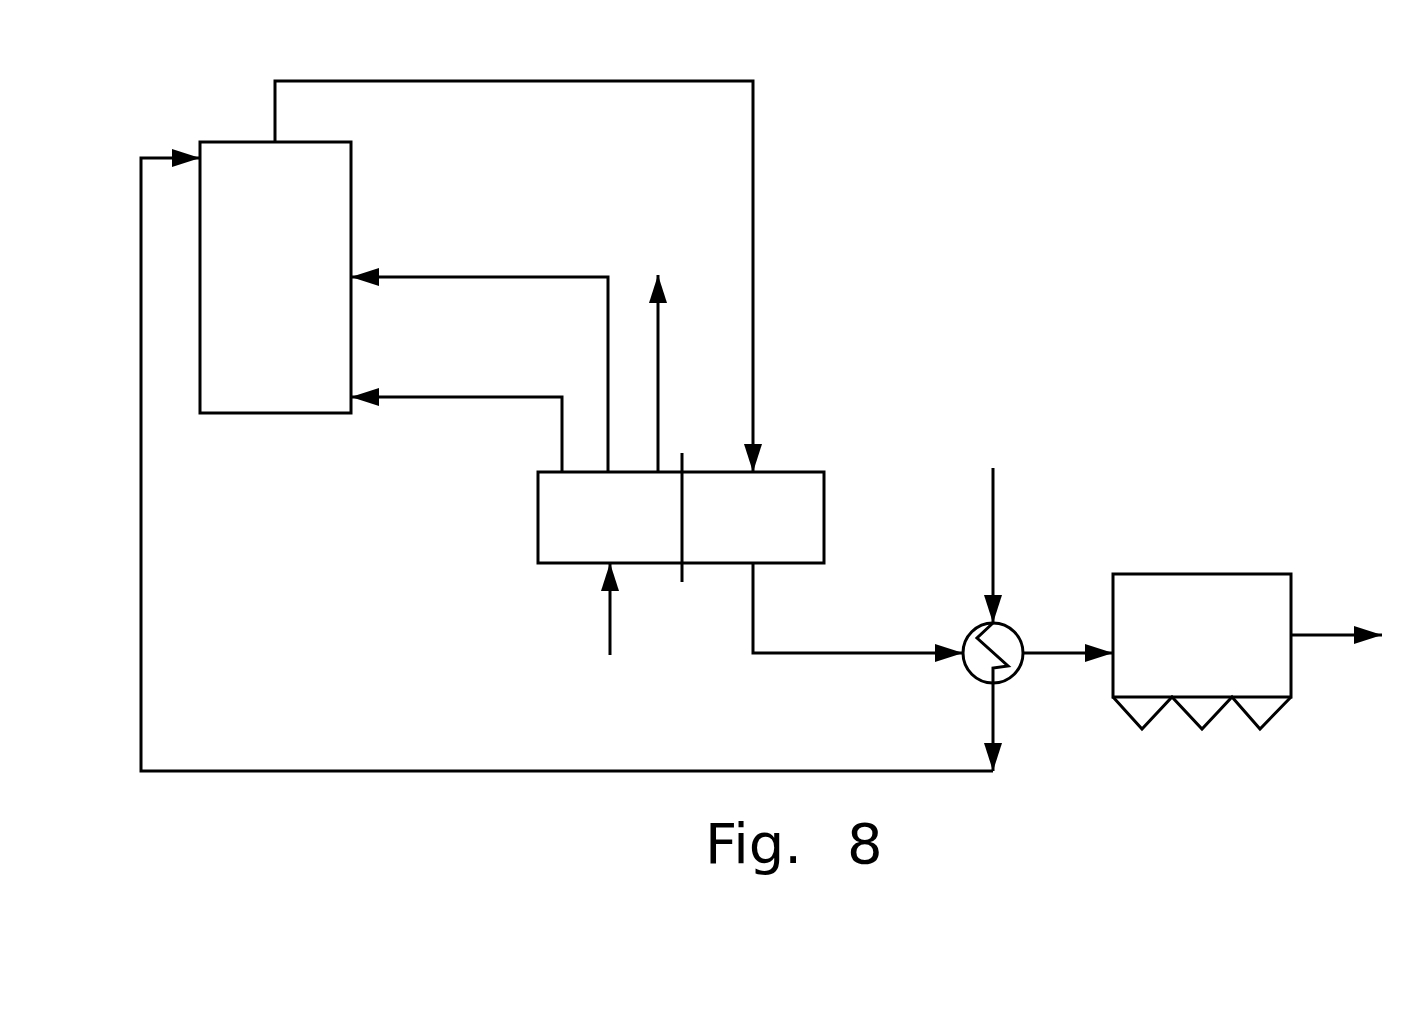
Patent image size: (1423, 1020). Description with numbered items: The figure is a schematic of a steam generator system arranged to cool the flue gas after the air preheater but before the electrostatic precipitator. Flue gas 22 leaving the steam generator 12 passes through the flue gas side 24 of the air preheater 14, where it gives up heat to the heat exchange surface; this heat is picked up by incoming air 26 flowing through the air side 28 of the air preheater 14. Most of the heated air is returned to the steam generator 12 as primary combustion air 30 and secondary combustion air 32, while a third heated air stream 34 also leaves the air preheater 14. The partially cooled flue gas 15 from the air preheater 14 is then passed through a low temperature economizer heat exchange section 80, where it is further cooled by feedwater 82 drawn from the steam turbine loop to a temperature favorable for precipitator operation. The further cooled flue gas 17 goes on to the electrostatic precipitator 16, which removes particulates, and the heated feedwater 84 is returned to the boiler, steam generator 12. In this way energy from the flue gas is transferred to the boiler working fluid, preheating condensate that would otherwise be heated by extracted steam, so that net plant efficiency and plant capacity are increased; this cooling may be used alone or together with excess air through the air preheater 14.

The steam generator 12 is at (243, 413).
The air preheater 14 is at (815, 516).
The partially cooled flue gas 15 is at (833, 655).
The electrostatic precipitator 16 is at (1223, 582).
The further cooled flue gas 17 is at (1322, 635).
The flue gas 22 is at (483, 82).
The flue gas side 24 is at (790, 490).
The incoming air 26 is at (610, 617).
The air side 28 is at (553, 492).
The primary combustion air 30 is at (427, 397).
The secondary combustion air 32 is at (488, 277).
The third heated air stream 34 is at (658, 360).
The low temperature economizer heat exchange section 80 is at (970, 677).
The feedwater 82 is at (993, 503).
The heated feedwater 84 is at (218, 770).